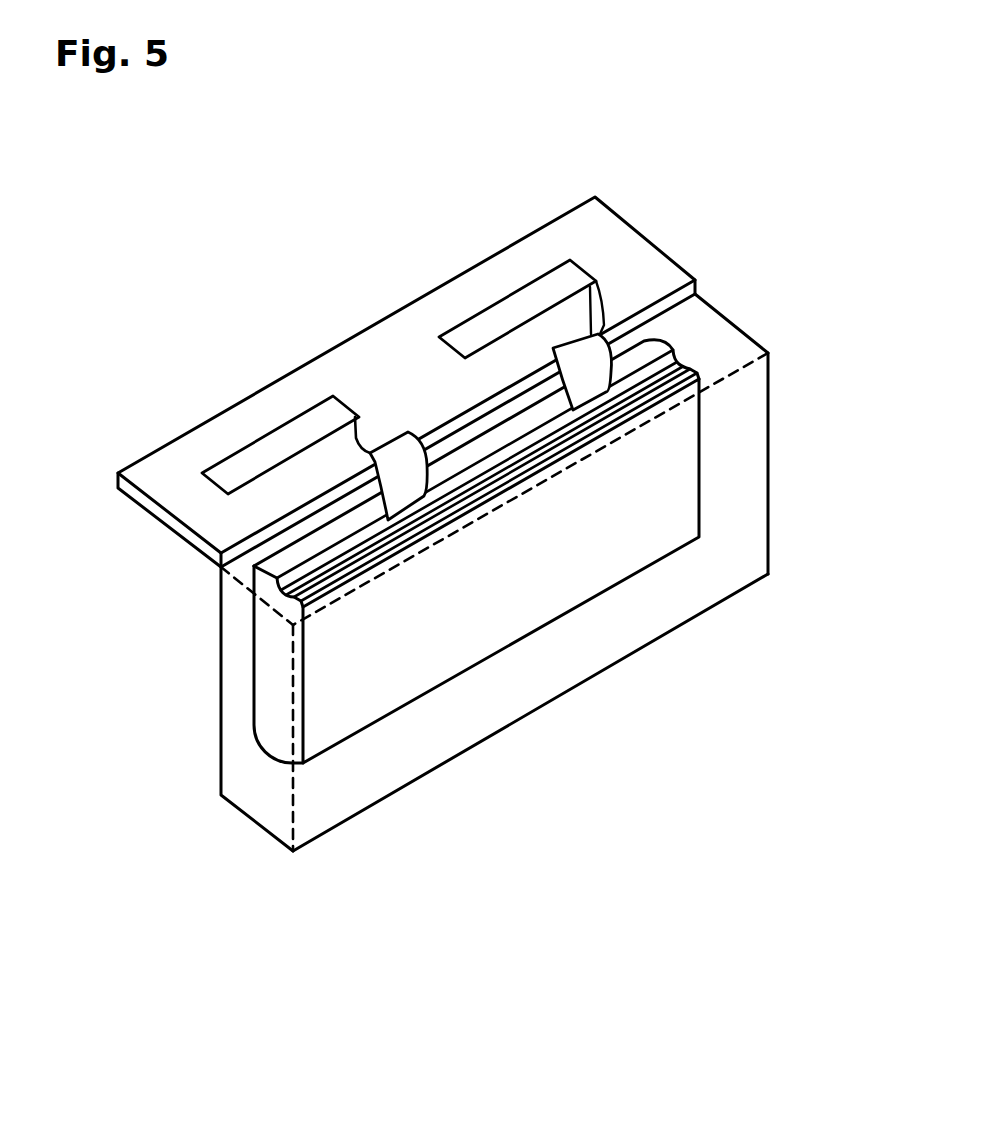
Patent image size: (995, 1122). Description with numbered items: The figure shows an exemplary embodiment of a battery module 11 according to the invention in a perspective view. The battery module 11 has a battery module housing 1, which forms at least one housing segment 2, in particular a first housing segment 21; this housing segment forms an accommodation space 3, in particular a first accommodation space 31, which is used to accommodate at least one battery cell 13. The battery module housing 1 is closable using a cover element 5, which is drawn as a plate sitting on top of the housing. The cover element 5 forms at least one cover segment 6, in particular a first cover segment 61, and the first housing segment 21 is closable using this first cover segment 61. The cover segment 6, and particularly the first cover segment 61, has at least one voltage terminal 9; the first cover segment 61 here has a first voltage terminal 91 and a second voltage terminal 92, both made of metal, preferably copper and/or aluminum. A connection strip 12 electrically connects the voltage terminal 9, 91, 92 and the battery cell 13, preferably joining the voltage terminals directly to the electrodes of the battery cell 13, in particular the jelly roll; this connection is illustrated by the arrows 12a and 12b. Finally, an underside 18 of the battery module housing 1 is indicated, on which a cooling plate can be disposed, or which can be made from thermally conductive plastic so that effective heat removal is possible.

The battery module housing 1 is at (451, 525).
The housing segment 2 is at (537, 572).
The first housing segment 21 is at (537, 572).
The accommodation space 3 is at (537, 572).
The housing top edge 31 is at (737, 358).
The cover element 5 is at (371, 352).
The cover segment 6 is at (406, 382).
The first cover segment 61 is at (253, 413).
The voltage terminal 9 is at (325, 315).
The first voltage terminal 91 is at (325, 315).
The second voltage terminal 92 is at (227, 482).
The battery module 11 is at (544, 626).
The connection strip 12 is at (489, 353).
The arrow 12a is at (512, 304).
The arrow 12b is at (312, 419).
The battery cell 13 is at (667, 440).
The underside 18 is at (632, 698).